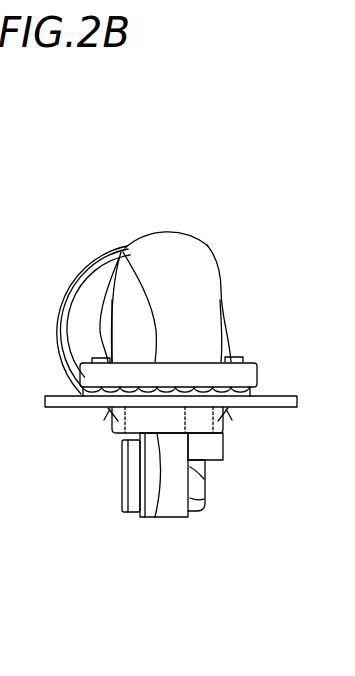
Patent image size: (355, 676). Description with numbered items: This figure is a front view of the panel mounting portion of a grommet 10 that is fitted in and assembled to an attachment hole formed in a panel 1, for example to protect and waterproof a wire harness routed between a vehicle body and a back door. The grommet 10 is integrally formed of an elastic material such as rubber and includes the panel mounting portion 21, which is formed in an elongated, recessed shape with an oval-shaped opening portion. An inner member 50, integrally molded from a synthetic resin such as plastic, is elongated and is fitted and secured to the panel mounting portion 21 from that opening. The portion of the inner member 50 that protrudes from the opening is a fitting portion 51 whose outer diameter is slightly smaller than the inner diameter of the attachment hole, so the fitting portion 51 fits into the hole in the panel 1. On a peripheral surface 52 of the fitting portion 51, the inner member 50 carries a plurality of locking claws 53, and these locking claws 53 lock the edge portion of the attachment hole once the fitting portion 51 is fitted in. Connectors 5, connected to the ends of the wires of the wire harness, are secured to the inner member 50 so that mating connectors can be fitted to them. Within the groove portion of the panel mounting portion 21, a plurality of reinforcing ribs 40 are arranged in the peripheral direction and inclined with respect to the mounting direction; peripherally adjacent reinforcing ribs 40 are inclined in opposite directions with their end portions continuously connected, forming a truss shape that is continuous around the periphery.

The panel 1 is at (284, 396).
The connectors 5 is at (172, 516).
The grommet 10 is at (179, 186).
The panel mounting portion 21 is at (212, 238).
The reinforcing ribs 40 is at (115, 250).
The inner member 50 is at (106, 443).
The fitting portion 51 is at (160, 500).
The peripheral surface 52 is at (168, 414).
The locking claws 53 is at (229, 413).